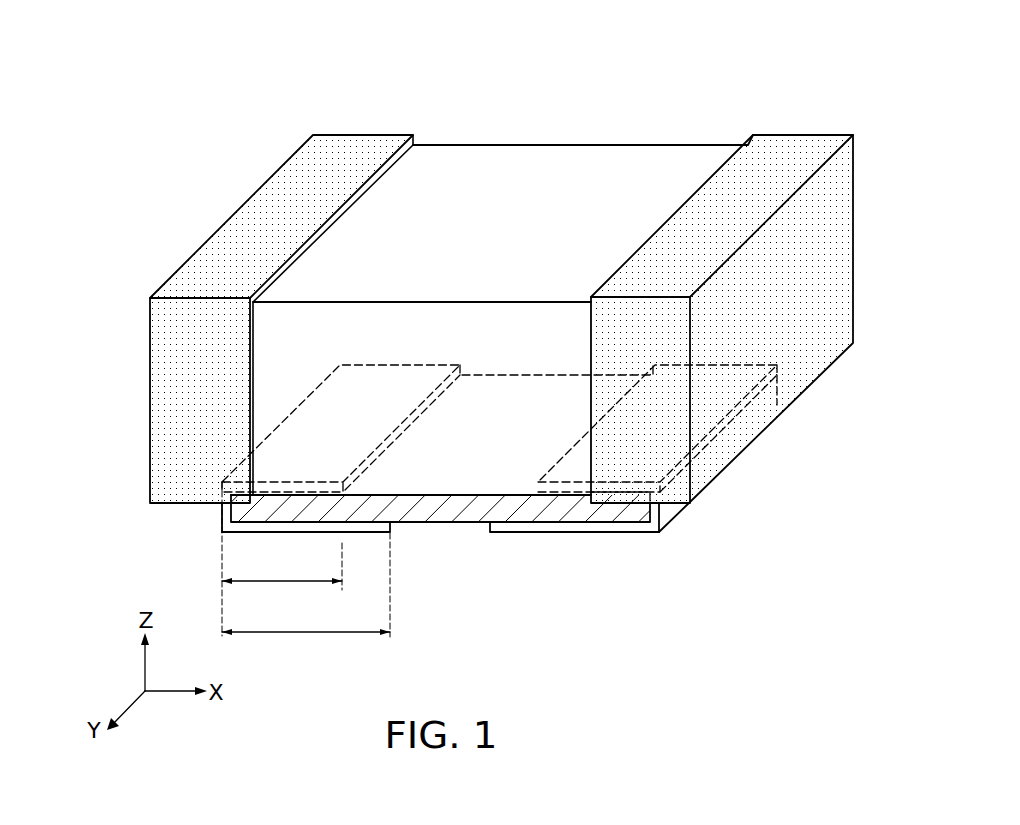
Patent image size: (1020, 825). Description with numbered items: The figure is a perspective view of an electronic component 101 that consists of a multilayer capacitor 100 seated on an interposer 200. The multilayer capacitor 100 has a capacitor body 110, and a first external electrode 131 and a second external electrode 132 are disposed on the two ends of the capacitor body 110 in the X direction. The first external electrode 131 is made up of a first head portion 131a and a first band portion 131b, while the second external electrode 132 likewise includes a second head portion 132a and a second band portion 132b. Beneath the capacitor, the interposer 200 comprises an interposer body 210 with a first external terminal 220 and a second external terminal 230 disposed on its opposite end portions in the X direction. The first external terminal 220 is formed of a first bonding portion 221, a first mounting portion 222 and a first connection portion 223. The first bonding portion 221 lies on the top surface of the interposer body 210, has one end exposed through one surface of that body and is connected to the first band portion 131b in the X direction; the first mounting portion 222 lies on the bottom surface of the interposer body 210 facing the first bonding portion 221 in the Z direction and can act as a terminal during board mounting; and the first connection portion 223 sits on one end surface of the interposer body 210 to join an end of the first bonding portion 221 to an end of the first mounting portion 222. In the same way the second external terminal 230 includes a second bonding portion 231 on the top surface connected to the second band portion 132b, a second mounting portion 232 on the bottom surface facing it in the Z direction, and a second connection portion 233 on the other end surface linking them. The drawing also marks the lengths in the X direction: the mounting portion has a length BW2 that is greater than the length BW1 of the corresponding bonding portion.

The electronic component 101 is at (512, 14).
The multilayer capacitor 100 is at (200, 230).
The capacitor body 110 is at (558, 150).
The first external electrode 131 is at (348, 72).
The first head portion 131a is at (268, 176).
The first band portion 131b is at (347, 148).
The second external electrode 132 is at (803, 72).
The second head portion 132a is at (853, 193).
The second band portion 132b is at (807, 150).
The interposer 200 is at (558, 552).
The interposer body 210 is at (467, 523).
The first external terminal 220 is at (82, 417).
The first bonding portion 221 is at (273, 440).
The first mounting portion 222 is at (255, 532).
The first connection portion 223 is at (220, 512).
The second external terminal 230 is at (840, 410).
The second bonding portion 231 is at (600, 462).
The second mounting portion 232 is at (590, 533).
The second connection portion 233 is at (668, 484).
The length of bonding portion BW1 is at (282, 559).
The length of mounting portion BW2 is at (306, 596).